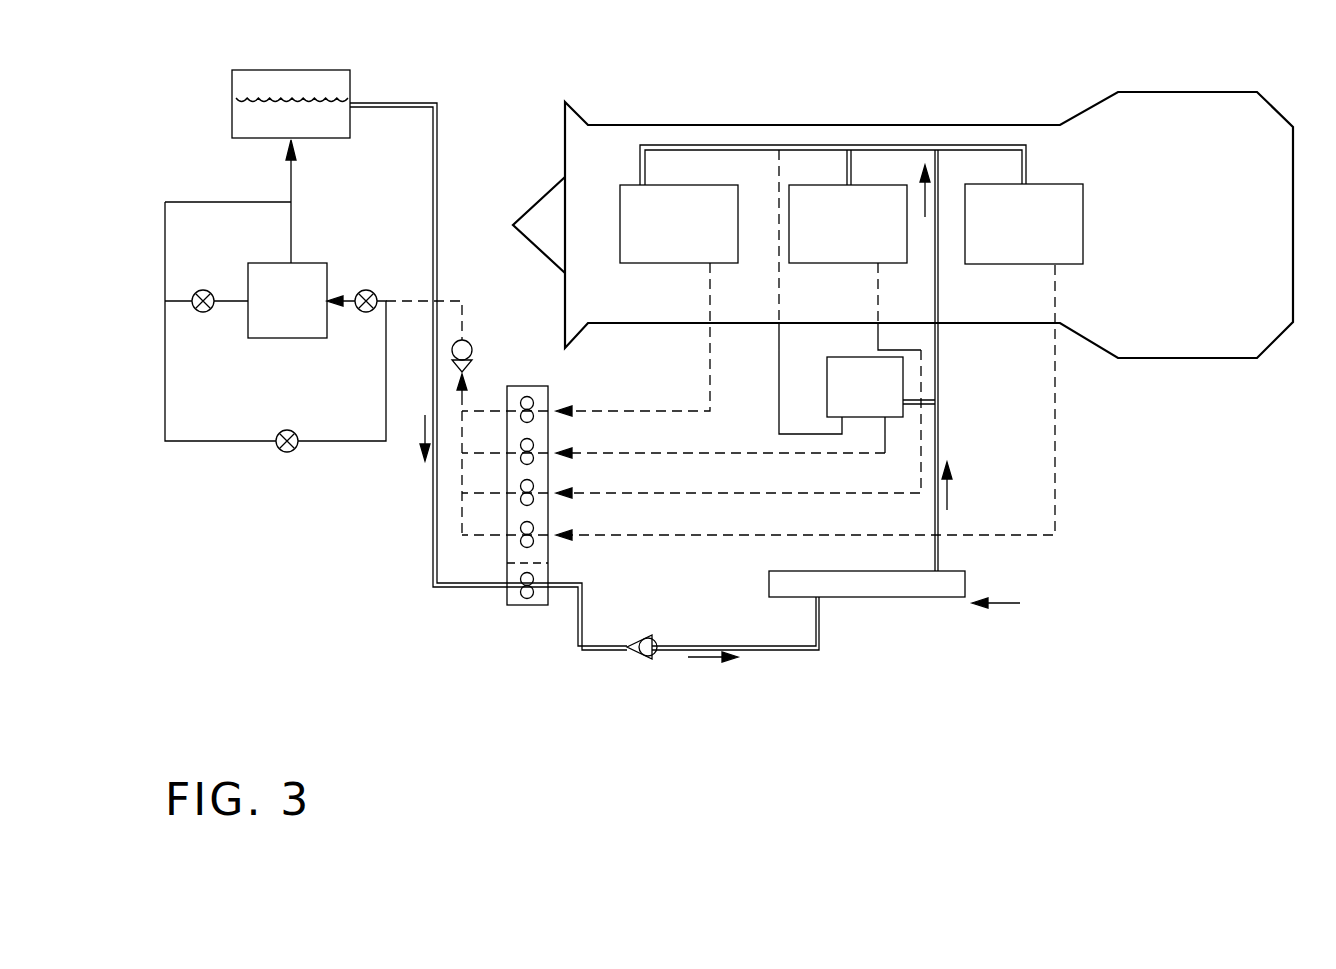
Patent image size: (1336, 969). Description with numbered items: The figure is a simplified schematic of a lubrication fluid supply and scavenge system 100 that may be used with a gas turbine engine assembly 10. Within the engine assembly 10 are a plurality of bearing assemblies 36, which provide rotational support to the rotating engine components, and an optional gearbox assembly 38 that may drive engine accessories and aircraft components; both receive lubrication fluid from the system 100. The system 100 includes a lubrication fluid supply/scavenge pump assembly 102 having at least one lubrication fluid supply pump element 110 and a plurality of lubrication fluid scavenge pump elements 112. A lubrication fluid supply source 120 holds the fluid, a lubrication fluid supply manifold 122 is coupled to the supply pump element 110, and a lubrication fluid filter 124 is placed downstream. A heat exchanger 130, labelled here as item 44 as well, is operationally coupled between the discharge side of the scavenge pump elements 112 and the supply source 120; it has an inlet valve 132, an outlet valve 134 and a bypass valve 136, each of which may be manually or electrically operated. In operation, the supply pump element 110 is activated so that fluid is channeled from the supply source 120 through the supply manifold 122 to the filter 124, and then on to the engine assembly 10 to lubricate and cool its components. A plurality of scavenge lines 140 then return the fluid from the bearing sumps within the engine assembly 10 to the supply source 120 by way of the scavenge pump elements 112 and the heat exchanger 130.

The gas turbine engine assembly 10 is at (1175, 91).
The bearing assemblies 36 is at (851, 224).
The gearbox assembly 38 is at (881, 387).
The heat exchanger 44 is at (315, 280).
The lubrication fluid supply and scavenge system 100 is at (662, 354).
The lubrication fluid supply/scavenge pump assembly 102 is at (511, 525).
The lubrication fluid supply pump element 110 is at (518, 606).
The lubrication fluid scavenge pump elements 112 is at (534, 401).
The lubrication fluid supply source 120 is at (316, 70).
The lubrication fluid supply manifold 122 is at (803, 651).
The lubrication fluid filter 124 is at (768, 582).
The heat exchanger 130 is at (287, 300).
The inlet valve 132 is at (367, 290).
The outlet valve 134 is at (203, 313).
The bypass valve 136 is at (285, 430).
The scavenge lines 140 is at (738, 451).